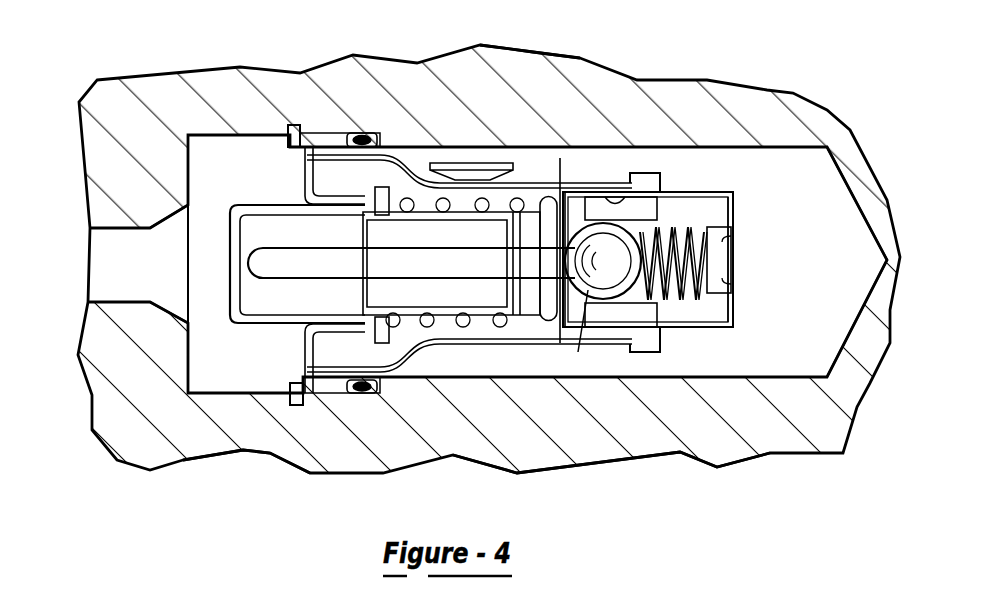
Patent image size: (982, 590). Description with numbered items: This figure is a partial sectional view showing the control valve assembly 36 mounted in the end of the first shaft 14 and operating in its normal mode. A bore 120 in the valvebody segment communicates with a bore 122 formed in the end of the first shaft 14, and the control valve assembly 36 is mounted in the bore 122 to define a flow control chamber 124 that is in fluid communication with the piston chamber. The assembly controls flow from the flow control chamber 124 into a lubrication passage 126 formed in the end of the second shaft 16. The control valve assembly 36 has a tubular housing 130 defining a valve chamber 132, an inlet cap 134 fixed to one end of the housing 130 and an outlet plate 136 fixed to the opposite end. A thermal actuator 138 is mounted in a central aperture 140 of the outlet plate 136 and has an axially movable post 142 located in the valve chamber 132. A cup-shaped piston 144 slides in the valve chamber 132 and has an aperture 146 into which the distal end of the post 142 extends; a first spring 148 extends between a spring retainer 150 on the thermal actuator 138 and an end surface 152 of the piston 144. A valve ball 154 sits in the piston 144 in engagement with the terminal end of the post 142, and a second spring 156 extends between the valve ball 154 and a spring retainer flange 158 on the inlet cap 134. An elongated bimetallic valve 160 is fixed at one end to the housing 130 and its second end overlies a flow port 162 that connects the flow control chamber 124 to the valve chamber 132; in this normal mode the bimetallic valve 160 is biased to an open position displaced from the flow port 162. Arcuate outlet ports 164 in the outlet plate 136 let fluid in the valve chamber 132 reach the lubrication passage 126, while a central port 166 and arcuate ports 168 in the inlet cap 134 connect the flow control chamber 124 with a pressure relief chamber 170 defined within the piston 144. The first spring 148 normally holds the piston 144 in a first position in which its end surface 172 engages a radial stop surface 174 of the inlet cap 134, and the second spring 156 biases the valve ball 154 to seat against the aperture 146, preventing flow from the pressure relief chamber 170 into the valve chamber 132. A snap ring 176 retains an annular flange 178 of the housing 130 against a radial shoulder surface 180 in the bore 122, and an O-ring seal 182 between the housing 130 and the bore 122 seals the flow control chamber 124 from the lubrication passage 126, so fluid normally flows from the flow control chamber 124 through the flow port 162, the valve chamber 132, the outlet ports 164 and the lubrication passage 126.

The first shaft 14 is at (663, 452).
The second shaft 16 is at (118, 183).
The control valve assembly 36 is at (486, 349).
The bore 120 is at (524, 112).
The bore 122 is at (757, 367).
The flow control chamber 124 is at (813, 275).
The lubrication passage 126 is at (122, 229).
The tubular housing 130 is at (535, 340).
The valve chamber 132 is at (533, 200).
The inlet cap 134 is at (703, 333).
The outlet plate 136 is at (253, 463).
The thermal actuator 138 is at (340, 297).
The central aperture 140 is at (333, 207).
The post 142 is at (400, 262).
The cup-shaped piston 144 is at (608, 335).
The aperture 146 is at (586, 296).
The first spring 148 is at (427, 327).
The spring retainer 150 is at (307, 163).
The end surface 152 is at (560, 345).
The valve ball 154 is at (631, 277).
The second spring 156 is at (683, 215).
The spring retainer flange 158 is at (735, 233).
The bimetallic valve 160 is at (448, 147).
The flow port 162 is at (405, 208).
The arcuate outlet ports 164 is at (303, 168).
The central port 166 is at (723, 260).
The arcuate ports 168 is at (717, 310).
The pressure relief chamber 170 is at (652, 198).
The end surface 172 is at (672, 187).
The radial stop surface 174 is at (647, 353).
The snap ring 176 is at (298, 377).
The annular flange 178 is at (325, 127).
The radial shoulder surface 180 is at (340, 387).
The O-ring seal 182 is at (362, 133).